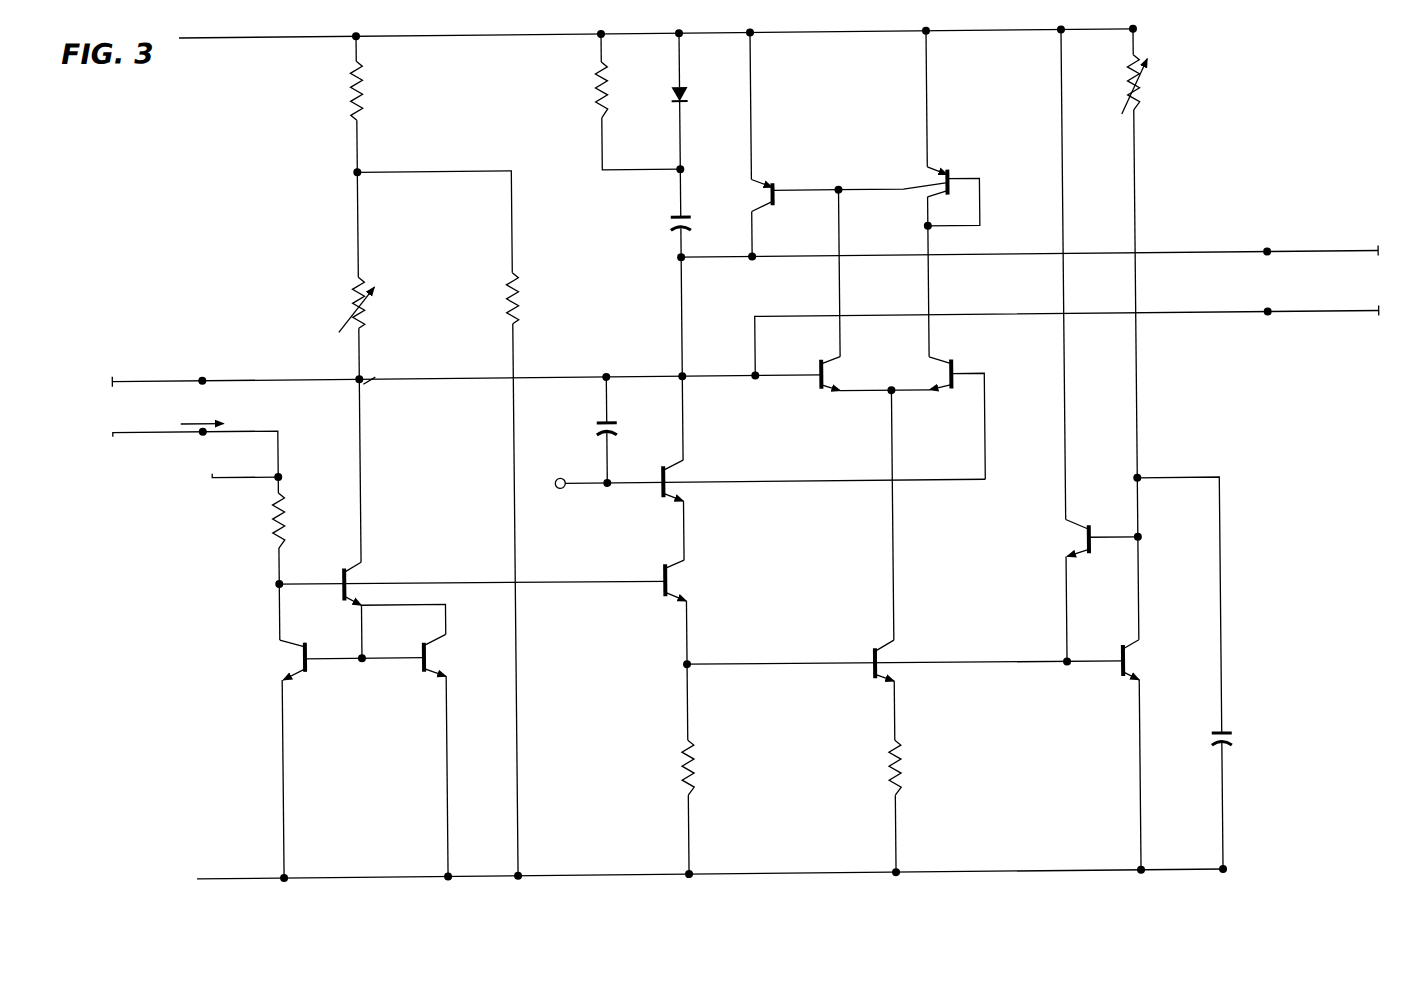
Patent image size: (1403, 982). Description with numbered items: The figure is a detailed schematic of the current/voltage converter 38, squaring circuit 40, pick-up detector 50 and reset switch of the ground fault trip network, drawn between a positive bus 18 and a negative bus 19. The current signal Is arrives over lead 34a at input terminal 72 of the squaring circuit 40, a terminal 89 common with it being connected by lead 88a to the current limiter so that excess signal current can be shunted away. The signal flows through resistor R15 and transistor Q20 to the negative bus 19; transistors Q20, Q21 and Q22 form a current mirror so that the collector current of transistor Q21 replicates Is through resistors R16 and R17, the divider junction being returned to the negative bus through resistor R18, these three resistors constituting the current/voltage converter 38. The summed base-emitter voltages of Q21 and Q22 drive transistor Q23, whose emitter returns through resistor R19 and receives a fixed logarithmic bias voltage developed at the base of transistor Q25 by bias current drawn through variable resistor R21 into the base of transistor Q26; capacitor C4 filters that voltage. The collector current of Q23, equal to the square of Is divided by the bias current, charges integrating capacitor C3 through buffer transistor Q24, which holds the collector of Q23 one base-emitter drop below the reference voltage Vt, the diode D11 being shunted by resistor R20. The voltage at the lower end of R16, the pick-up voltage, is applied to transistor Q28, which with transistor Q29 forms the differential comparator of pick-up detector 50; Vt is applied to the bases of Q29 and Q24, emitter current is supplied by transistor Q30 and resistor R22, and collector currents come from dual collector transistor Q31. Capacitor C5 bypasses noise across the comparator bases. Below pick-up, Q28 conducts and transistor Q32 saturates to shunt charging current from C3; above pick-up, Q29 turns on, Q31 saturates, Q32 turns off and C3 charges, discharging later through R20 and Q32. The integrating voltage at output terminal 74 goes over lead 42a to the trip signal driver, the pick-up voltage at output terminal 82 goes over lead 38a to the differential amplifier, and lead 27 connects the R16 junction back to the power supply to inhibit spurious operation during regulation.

The positive bus 18 is at (467, 33).
The negative bus 19 is at (576, 878).
The lead 27 is at (122, 376).
The lead 34a is at (124, 452).
The current/voltage converter 38 is at (329, 236).
The lead 38a is at (1330, 317).
The squaring circuit 40 is at (263, 628).
The lead 42a is at (1330, 257).
The pick-up detector 50 is at (898, 378).
The input terminal 72 is at (205, 430).
The output terminal 74 is at (1269, 261).
The output terminal 82 is at (1269, 321).
The lead 88a is at (258, 484).
The terminal 89 is at (281, 471).
The resistor R15 is at (284, 514).
The variable resistor R16 is at (372, 300).
The resistor R17 is at (364, 82).
The resistor R18 is at (520, 300).
The resistor R19 is at (691, 770).
The resistor R20 is at (600, 84).
The variable resistor R21 is at (1146, 97).
The resistor R22 is at (898, 772).
The integrating capacitor C3 is at (671, 224).
The capacitor C4 is at (1230, 745).
The capacitor C5 is at (618, 431).
The diode D11 is at (691, 95).
The comparator reference voltage Vt is at (754, 480).
The transistor Q20 is at (300, 676).
The transistor Q21 is at (364, 576).
The transistor Q22 is at (433, 673).
The transistor Q23 is at (662, 597).
The buffer transistor Q24 is at (670, 497).
The transistor Q25 is at (1126, 678).
The transistor Q26 is at (1077, 524).
The transistor Q28 is at (826, 391).
The transistor Q29 is at (941, 390).
The transistor Q30 is at (878, 681).
The dual collector transistor Q31 is at (938, 176).
The transistor Q32 is at (762, 180).